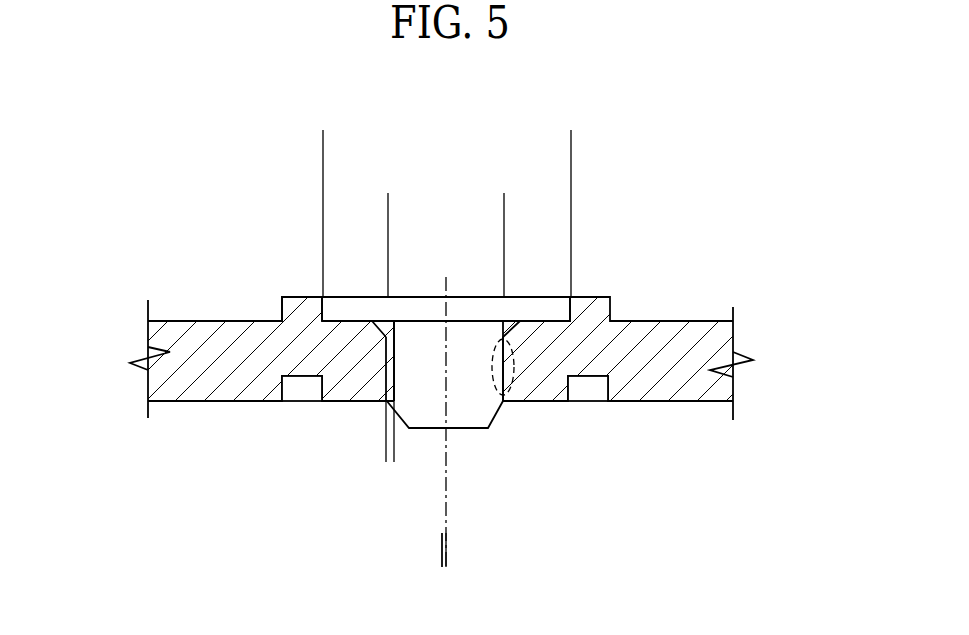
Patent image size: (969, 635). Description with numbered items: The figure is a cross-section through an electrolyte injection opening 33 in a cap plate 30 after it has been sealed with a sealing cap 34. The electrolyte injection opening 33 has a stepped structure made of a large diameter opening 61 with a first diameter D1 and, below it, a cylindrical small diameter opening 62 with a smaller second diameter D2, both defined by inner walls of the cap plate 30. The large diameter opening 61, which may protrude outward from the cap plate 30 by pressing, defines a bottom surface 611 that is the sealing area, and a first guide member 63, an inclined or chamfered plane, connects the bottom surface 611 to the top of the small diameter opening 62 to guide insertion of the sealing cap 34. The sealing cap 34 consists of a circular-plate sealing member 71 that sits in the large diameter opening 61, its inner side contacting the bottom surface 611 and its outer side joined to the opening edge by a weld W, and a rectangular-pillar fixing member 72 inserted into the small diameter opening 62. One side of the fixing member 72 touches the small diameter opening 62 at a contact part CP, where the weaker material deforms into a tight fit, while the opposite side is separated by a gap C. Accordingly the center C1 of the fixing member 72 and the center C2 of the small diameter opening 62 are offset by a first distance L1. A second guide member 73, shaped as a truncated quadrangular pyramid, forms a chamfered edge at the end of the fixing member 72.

The cap plate 30 is at (212, 383).
The electrolyte injection opening 33 is at (380, 384).
The sealing cap 34 is at (375, 282).
The large diameter opening 61 is at (323, 308).
The bottom surface 611 is at (355, 320).
The small diameter opening 62 is at (413, 298).
The first guide member 63 is at (485, 298).
The sealing member 71 is at (520, 297).
The fixing member 72 is at (483, 388).
The second guide member 73 is at (488, 428).
The weld W is at (572, 292).
The contact part CP is at (513, 369).
The gap C is at (417, 457).
The center of fixing member C1 is at (448, 533).
The center of small diameter opening C2 is at (443, 533).
The first distance L1 is at (470, 562).
The first diameter D1 is at (571, 135).
The second diameter D2 is at (504, 198).